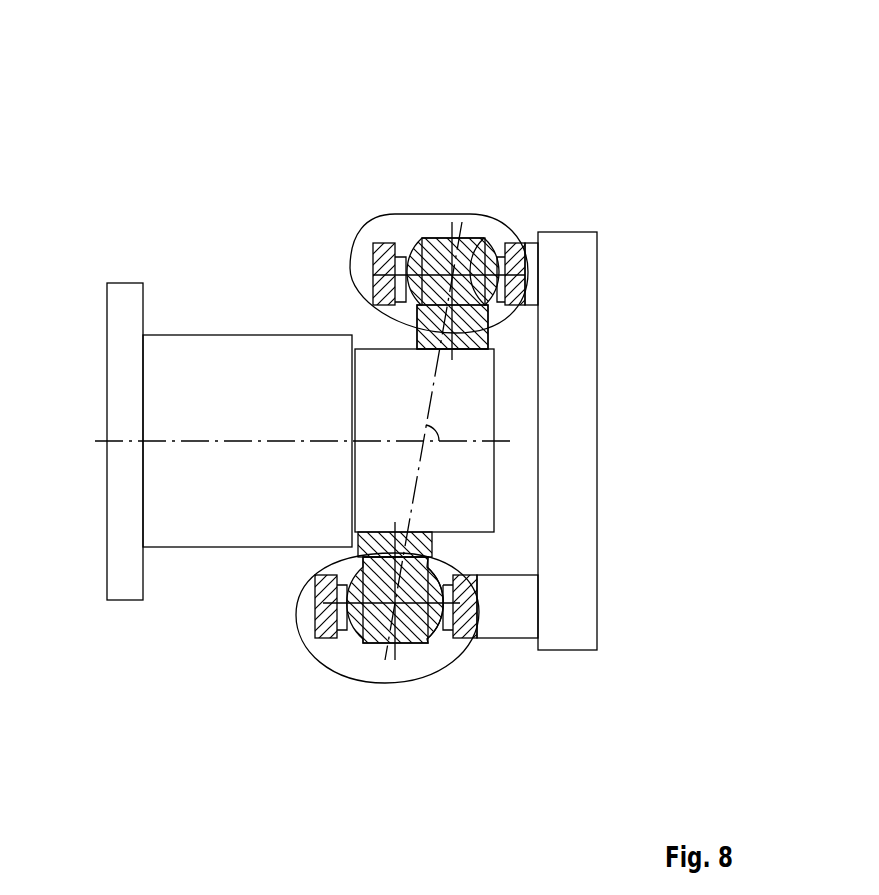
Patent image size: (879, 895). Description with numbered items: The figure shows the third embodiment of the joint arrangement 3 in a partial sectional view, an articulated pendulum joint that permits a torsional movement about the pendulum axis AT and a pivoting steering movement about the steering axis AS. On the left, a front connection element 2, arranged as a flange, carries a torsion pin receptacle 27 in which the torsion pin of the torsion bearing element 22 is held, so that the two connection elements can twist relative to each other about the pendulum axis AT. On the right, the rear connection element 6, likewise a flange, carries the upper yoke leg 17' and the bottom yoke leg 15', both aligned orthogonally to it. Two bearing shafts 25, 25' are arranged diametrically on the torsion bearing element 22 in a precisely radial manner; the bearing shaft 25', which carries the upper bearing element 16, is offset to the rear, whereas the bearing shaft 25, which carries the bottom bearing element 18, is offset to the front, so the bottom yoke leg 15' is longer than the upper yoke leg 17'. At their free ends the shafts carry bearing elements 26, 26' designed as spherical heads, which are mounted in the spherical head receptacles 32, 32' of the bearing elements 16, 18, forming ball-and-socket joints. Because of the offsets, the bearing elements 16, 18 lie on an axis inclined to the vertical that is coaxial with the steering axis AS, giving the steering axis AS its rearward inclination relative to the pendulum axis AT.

The joint arrangement 3 is at (219, 170).
The front connection element 2 is at (127, 400).
The pendulum axis AT is at (102, 442).
The torsion pin receptacle 27 is at (198, 377).
The torsion bearing element 22 is at (394, 405).
The rear connection element 6 is at (570, 446).
The upper yoke leg 17' is at (614, 287).
The bottom yoke leg 15' is at (536, 677).
The upper bearing element 16 is at (383, 255).
The bearing element 26' is at (425, 245).
The bearing shaft 25' is at (372, 310).
The spherical head receptacle 32' is at (539, 218).
The steering axis AS is at (465, 232).
The bottom bearing element 18 is at (330, 635).
The bearing element 26 is at (395, 665).
The bearing shaft 25 is at (307, 580).
The spherical head receptacle 32 is at (452, 670).